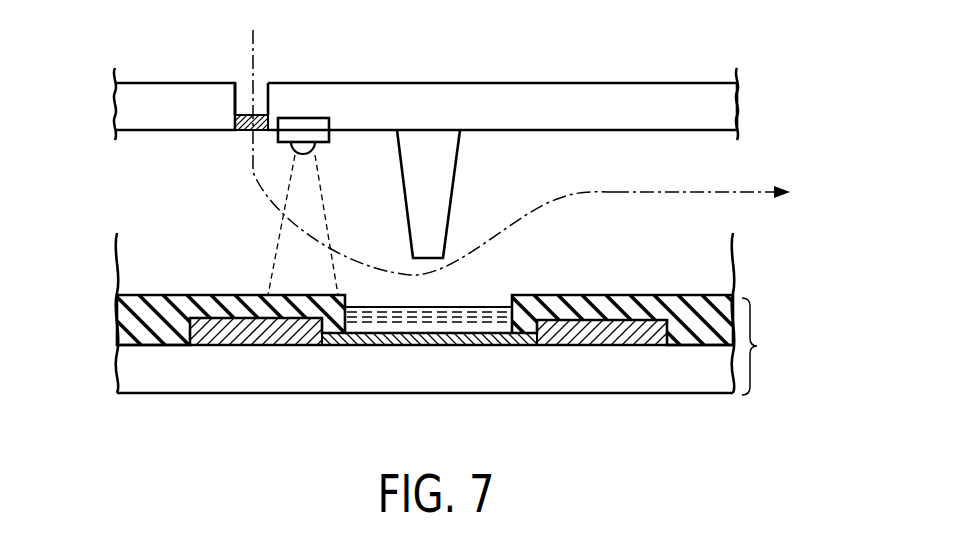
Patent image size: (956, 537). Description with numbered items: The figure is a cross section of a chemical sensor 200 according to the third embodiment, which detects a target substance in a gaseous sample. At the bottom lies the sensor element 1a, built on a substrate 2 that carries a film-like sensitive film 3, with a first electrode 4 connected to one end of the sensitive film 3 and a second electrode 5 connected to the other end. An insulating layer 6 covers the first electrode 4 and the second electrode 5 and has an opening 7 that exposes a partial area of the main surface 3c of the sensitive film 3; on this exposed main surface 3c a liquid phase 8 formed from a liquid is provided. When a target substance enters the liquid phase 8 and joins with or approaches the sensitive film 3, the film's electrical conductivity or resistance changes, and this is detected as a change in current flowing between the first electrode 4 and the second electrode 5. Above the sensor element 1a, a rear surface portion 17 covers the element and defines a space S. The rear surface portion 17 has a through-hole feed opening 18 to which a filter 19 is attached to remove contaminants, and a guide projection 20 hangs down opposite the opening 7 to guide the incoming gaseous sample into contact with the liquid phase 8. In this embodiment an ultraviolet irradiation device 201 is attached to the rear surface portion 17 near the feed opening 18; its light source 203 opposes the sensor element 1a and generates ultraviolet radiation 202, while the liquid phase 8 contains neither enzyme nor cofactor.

The chemical sensor 200 is at (146, 50).
The rear surface portion 17 is at (497, 92).
The feed opening 18 is at (242, 77).
The filter 19 is at (247, 131).
The ultraviolet irradiation device 201 is at (303, 128).
The light source 203 is at (313, 145).
The ultraviolet radiation 202 is at (325, 213).
The guide projection 20 is at (443, 182).
The space S is at (652, 175).
The substrate 2 is at (172, 372).
The insulating layer 6 is at (712, 338).
The first electrode 4 is at (248, 340).
The second electrode 5 is at (603, 335).
The sensitive film 3 is at (495, 340).
The main surface 3c is at (402, 338).
The opening 7 is at (357, 328).
The liquid phase 8 is at (498, 310).
The sensor element 1a is at (764, 346).